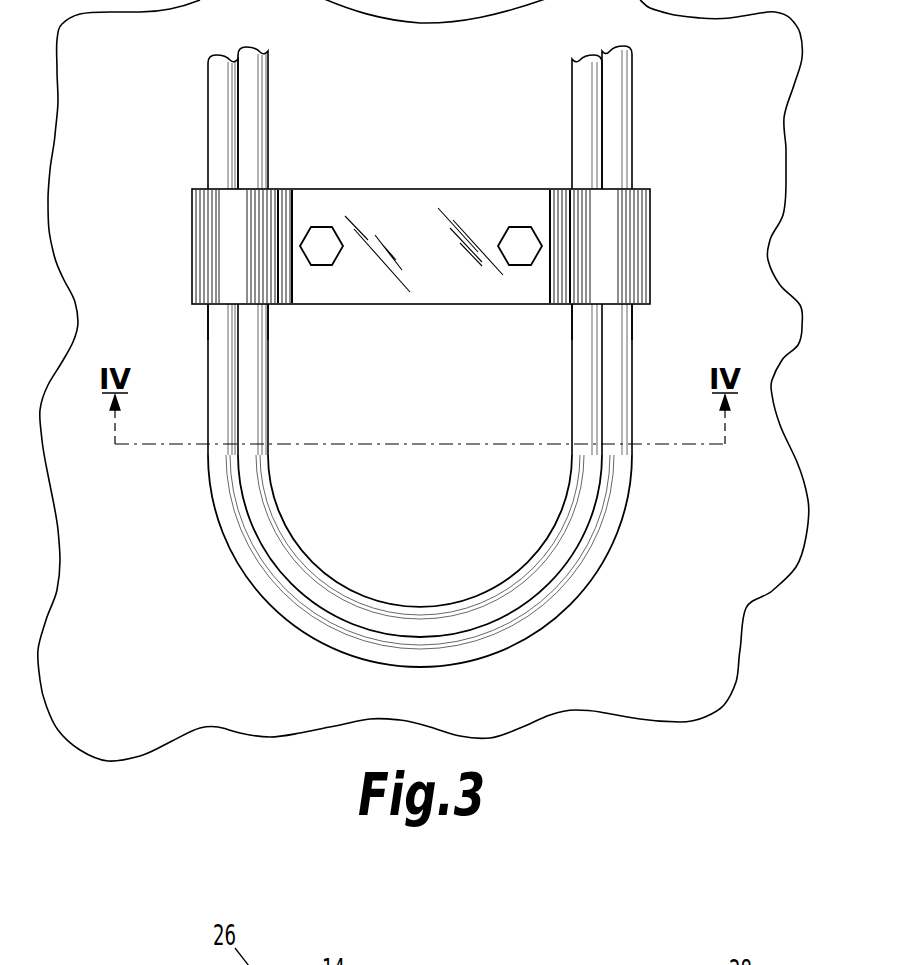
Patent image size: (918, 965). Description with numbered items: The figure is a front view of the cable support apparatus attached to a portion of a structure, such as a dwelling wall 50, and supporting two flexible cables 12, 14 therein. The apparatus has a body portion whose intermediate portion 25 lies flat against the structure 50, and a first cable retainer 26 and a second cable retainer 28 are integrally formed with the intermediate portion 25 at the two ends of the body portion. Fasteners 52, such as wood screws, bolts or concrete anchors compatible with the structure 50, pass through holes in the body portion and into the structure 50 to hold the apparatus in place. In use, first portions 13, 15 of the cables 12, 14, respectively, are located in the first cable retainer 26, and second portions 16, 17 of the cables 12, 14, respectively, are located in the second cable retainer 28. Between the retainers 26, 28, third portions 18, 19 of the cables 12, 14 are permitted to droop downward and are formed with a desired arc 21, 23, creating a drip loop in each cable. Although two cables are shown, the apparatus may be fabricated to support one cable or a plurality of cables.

The cable 12 is at (203, 134).
The cable 14 is at (275, 112).
The first portion of cable 13 is at (206, 309).
The first portion of cable 15 is at (270, 309).
The second portion of cable 16 is at (634, 309).
The second portion of cable 17 is at (569, 309).
The third portion of cable 18 is at (285, 590).
The third portion of cable 19 is at (393, 606).
The arc 21 is at (527, 644).
The arc 23 is at (309, 545).
The intermediate portion 25 is at (457, 285).
The first cable retainer 26 is at (205, 222).
The second cable retainer 28 is at (652, 248).
The dwelling wall 50 is at (763, 88).
The fasteners 52 is at (508, 232).